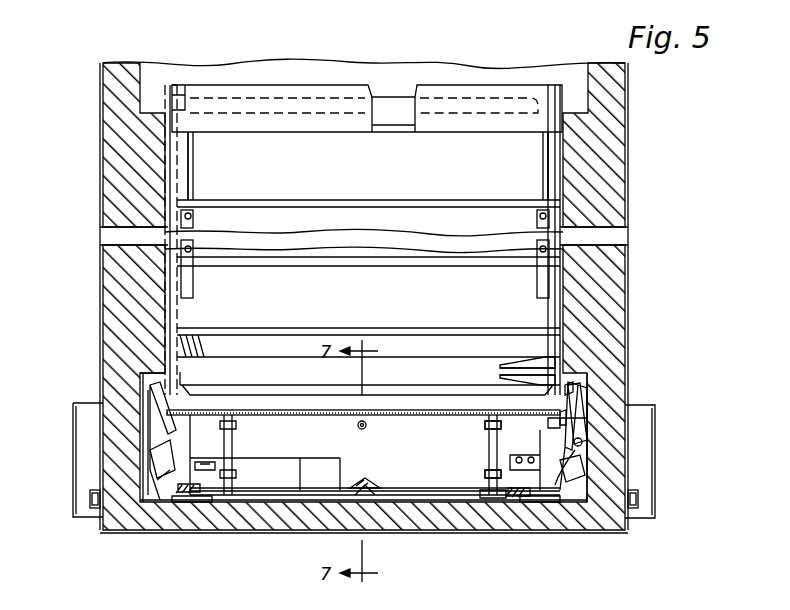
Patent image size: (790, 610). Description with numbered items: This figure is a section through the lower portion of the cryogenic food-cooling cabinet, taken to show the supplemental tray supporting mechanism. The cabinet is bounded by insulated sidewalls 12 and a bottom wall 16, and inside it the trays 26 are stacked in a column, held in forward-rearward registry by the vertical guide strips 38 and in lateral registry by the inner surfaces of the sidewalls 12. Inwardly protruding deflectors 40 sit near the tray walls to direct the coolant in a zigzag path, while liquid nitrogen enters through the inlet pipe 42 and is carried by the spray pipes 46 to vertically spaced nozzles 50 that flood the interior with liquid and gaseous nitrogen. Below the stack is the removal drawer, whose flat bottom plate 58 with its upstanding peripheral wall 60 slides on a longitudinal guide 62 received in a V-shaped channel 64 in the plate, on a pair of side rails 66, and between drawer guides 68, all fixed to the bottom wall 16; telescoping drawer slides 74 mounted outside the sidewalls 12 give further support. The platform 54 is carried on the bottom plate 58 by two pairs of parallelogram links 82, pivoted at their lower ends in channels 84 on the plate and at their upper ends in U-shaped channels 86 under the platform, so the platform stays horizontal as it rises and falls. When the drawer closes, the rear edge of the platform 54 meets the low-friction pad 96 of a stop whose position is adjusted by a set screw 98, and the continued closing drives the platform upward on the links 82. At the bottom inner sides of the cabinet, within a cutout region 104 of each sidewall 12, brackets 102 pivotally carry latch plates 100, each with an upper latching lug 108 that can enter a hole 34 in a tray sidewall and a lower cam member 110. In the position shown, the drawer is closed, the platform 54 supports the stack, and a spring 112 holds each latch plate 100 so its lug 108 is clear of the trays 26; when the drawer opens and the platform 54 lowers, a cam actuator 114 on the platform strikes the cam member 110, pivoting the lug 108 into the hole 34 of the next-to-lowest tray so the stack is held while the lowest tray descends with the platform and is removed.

The sidewall 12 is at (628, 138).
The bottom wall 16 is at (268, 530).
The tray 26 is at (255, 388).
The holes 34 is at (528, 382).
The guide strips 38 is at (172, 256).
The deflectors 40 is at (322, 207).
The inlet pipe 42 is at (192, 84).
The spray pipes 46 is at (190, 162).
The nozzles 50 is at (190, 249).
The platform 54 is at (245, 418).
The bottom plate 58 is at (322, 487).
The peripheral wall 60 is at (205, 462).
The guide 62 is at (378, 498).
The V-shaped channel 64 is at (360, 488).
The side rails 66 is at (245, 490).
The drawer guides 68 is at (195, 503).
The drawer slides 74 is at (86, 500).
The parallelogram links 82 is at (489, 451).
The channels 84 is at (485, 473).
The U-shaped channels 86 is at (485, 426).
The pad 96 is at (420, 447).
The set screw 98 is at (358, 428).
The latch plates 100 is at (150, 418).
The brackets 102 is at (150, 467).
The cutout region 104 is at (570, 390).
The latching lug 108 is at (585, 380).
The cam members 110 is at (578, 462).
The spring 112 is at (628, 430).
The cam actuator 114 is at (554, 426).